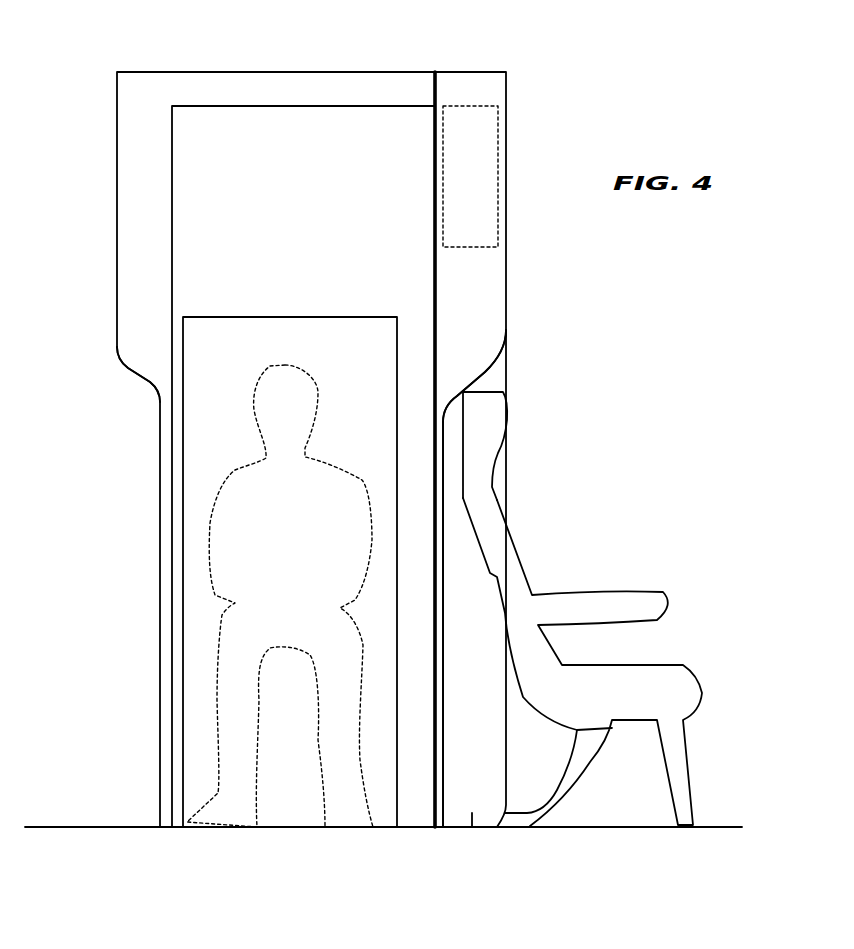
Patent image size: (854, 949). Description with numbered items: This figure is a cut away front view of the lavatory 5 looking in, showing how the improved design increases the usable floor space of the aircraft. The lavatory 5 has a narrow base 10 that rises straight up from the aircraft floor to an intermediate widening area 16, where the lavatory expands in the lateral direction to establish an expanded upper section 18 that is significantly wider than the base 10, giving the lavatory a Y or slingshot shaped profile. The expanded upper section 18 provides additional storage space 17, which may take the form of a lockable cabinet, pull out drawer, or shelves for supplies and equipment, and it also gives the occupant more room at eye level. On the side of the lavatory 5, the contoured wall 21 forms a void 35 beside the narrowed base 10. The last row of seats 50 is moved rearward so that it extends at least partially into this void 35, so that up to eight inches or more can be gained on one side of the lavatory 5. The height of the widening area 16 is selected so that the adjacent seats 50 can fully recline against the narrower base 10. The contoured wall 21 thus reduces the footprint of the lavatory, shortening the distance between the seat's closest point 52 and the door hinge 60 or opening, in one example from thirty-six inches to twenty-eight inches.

The lavatory 5 is at (264, 46).
The expanded upper section 18 is at (124, 195).
The storage space 17 is at (498, 138).
The contoured wall 21 is at (507, 285).
The door hinge 60 is at (172, 256).
The widening area 16 is at (142, 365).
The seat's closest point 52 is at (465, 391).
The seats 50 is at (697, 677).
The narrow base 10 is at (435, 835).
The void 35 is at (472, 813).